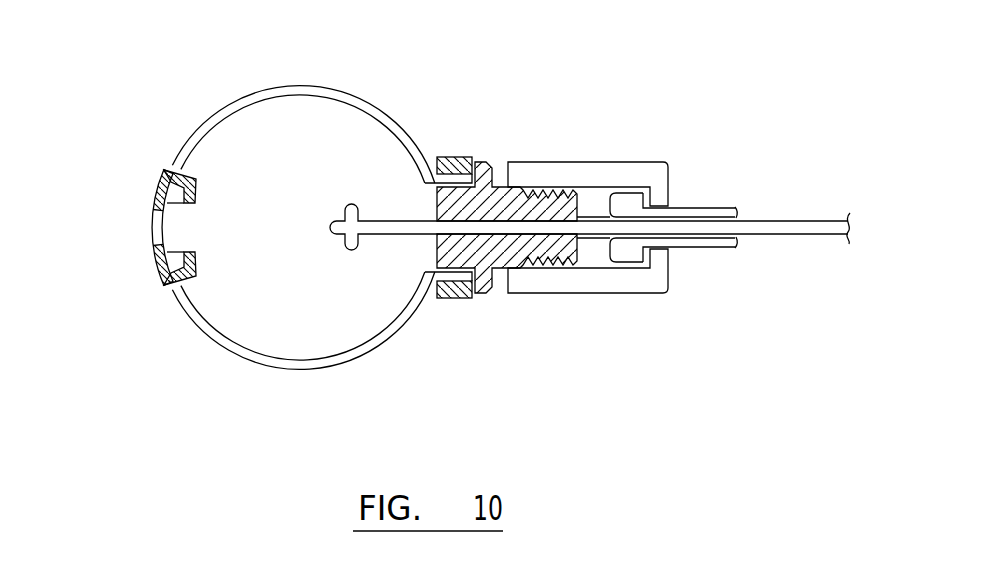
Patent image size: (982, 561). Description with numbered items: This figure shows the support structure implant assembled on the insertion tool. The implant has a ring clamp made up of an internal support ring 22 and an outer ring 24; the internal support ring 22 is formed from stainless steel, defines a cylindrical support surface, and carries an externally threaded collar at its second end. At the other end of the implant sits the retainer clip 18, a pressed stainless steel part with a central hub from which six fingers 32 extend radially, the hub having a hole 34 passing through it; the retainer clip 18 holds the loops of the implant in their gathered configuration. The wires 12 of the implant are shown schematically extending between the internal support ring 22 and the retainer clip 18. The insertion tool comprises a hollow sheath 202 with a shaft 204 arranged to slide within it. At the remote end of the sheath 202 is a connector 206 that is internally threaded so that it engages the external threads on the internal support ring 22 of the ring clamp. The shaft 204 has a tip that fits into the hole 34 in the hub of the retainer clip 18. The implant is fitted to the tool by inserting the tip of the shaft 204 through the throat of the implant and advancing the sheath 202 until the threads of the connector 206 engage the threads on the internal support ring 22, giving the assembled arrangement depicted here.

The wires 12 is at (342, 94).
The retainer clip 18 is at (119, 174).
The internal support ring 22 is at (452, 273).
The outer ring 24 is at (450, 157).
The fingers 32 is at (178, 172).
The hole 34 is at (153, 231).
The hollow sheath 202 is at (697, 208).
The shaft 204 is at (803, 234).
The connector 206 is at (544, 162).